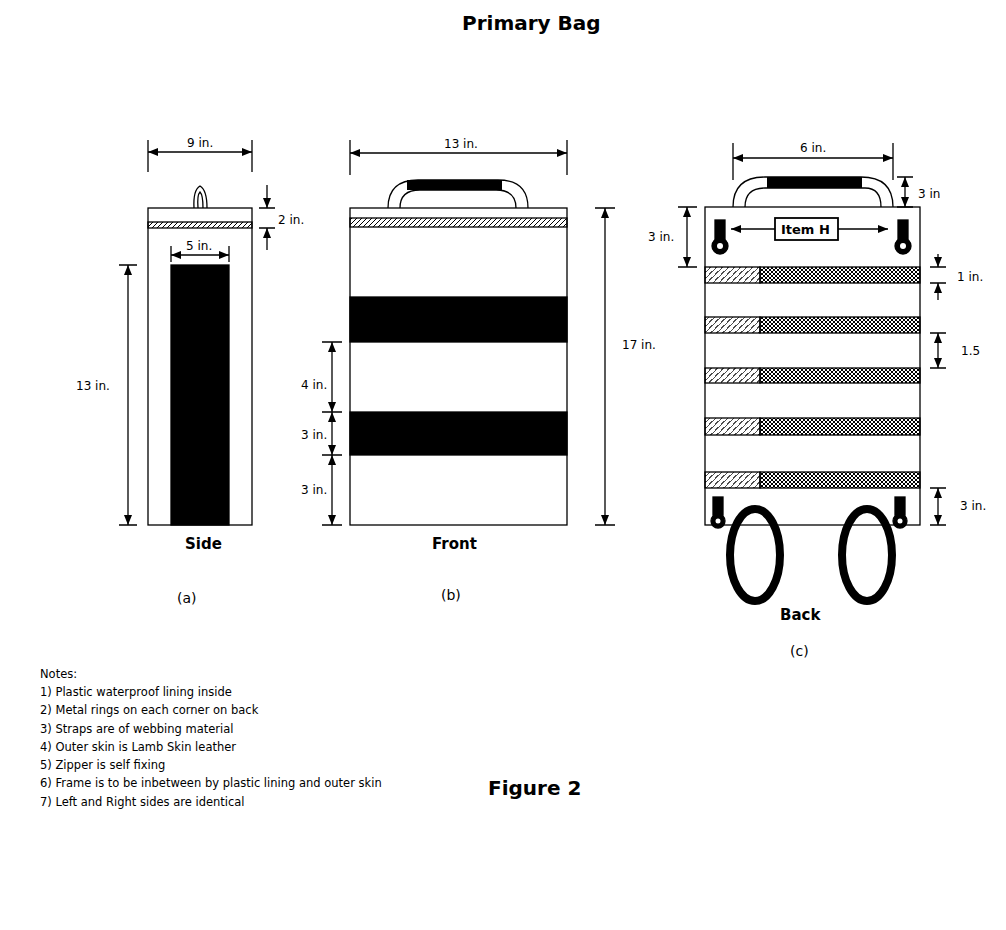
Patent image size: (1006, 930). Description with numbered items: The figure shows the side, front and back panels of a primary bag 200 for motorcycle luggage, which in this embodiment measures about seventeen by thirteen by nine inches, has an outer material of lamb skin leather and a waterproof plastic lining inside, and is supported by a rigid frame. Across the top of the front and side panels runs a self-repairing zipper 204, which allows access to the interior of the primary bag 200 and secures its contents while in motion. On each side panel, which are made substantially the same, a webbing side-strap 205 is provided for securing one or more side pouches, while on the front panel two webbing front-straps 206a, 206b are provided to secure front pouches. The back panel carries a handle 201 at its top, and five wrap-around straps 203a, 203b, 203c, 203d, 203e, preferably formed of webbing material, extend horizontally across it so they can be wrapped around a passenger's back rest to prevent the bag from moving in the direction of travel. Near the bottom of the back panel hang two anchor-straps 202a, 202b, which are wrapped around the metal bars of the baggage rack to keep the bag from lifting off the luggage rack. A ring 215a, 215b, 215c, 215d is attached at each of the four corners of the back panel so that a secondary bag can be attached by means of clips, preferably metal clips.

The primary bag 200 is at (160, 208).
The handle 201 is at (519, 187).
The anchor-strap 202a is at (732, 584).
The anchor-strap 202b is at (887, 597).
The wrap-around strap 203a is at (818, 284).
The wrap-around strap 203b is at (838, 334).
The wrap-around strap 203c is at (843, 384).
The wrap-around strap 203d is at (818, 436).
The wrap-around strap 203e is at (797, 489).
The self-repairing zipper 204 is at (240, 228).
The side-strap 205 is at (229, 404).
The front-strap 206a is at (432, 342).
The front-strap 206b is at (450, 455).
The ring 215a is at (718, 221).
The ring 215b is at (912, 246).
The ring 215c is at (712, 528).
The ring 215d is at (907, 528).